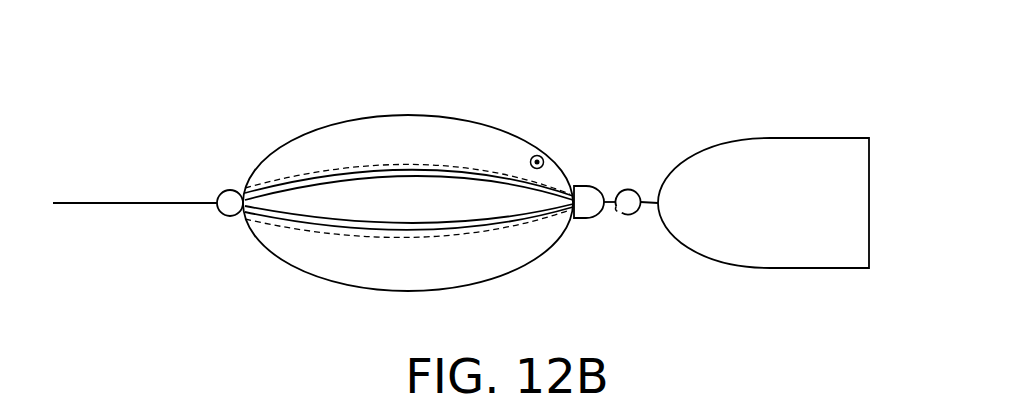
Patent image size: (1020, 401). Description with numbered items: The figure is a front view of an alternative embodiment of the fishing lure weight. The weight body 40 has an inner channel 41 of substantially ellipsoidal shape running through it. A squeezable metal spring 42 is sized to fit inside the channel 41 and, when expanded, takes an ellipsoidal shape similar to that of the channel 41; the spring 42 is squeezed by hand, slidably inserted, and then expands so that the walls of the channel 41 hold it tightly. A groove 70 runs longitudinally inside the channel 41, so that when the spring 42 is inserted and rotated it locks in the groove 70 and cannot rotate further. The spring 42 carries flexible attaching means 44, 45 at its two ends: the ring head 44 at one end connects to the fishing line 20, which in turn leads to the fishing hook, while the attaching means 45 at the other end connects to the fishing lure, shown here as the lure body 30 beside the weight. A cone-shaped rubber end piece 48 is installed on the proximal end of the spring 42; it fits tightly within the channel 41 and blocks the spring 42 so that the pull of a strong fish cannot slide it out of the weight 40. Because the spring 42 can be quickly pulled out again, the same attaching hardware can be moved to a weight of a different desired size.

The fishing line 20 is at (162, 203).
The lure body 30 is at (788, 138).
The weight body 40 is at (325, 120).
The inner channel 41 is at (517, 226).
The metal spring 42 is at (513, 202).
The attaching means (ring head) 44 is at (232, 190).
The attaching means 45 is at (628, 190).
The end piece 48 is at (583, 185).
The groove 70 is at (408, 163).